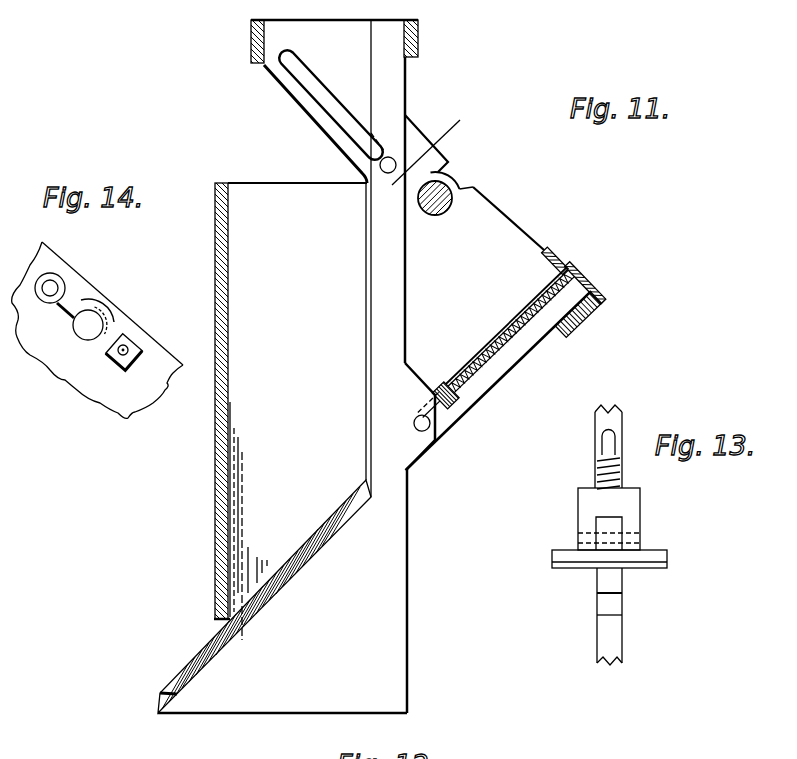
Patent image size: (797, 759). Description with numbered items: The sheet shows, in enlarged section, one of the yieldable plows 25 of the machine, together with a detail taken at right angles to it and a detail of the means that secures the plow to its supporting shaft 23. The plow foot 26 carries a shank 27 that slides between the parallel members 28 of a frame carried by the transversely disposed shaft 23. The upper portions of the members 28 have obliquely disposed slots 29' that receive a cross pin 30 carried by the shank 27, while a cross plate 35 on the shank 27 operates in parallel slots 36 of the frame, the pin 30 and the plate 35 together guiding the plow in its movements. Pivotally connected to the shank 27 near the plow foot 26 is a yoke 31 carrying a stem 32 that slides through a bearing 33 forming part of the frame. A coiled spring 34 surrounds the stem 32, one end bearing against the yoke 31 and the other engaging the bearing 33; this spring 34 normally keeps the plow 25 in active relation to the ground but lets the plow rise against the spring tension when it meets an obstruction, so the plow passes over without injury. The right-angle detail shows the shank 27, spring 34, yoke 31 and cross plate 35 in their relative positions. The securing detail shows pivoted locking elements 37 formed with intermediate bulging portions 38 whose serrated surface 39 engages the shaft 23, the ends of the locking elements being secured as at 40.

In FIG. 11, the shaft 23 is at (448, 187).
In FIG. 14, the shaft 23 is at (85, 333).
In FIG. 11, the plow 25 is at (200, 653).
In FIG. 11, the plow foot 26 is at (390, 647).
In FIG. 11, the shank 27 is at (443, 141).
In FIG. 13, the shank 27 is at (622, 413).
In FIG. 11, the parallel members 28 is at (523, 231).
In FIG. 14, the parallel members 28 is at (128, 418).
In FIG. 11, the obliquely disposed slots 29' is at (308, 105).
In FIG. 11, the cross pin 30 is at (380, 165).
In FIG. 11, the yoke 31 is at (457, 407).
In FIG. 13, the yoke 31 is at (627, 502).
In FIG. 11, the stem 32 is at (577, 267).
In FIG. 11, the bearing 33 is at (593, 298).
In FIG. 11, the coiled spring 34 is at (522, 328).
In FIG. 13, the coiled spring 34 is at (622, 470).
In FIG. 11, the cross plate 35 is at (423, 432).
In FIG. 13, the cross plate 35 is at (658, 553).
In FIG. 11, the parallel slots 36 is at (492, 373).
In FIG. 14, the pivoted locking elements 37 is at (86, 284).
In FIG. 14, the intermediate bulging portions 38 is at (90, 299).
In FIG. 14, the serrated surface 39 is at (107, 318).
In FIG. 14, the securing means for locking element ends 40 is at (133, 347).